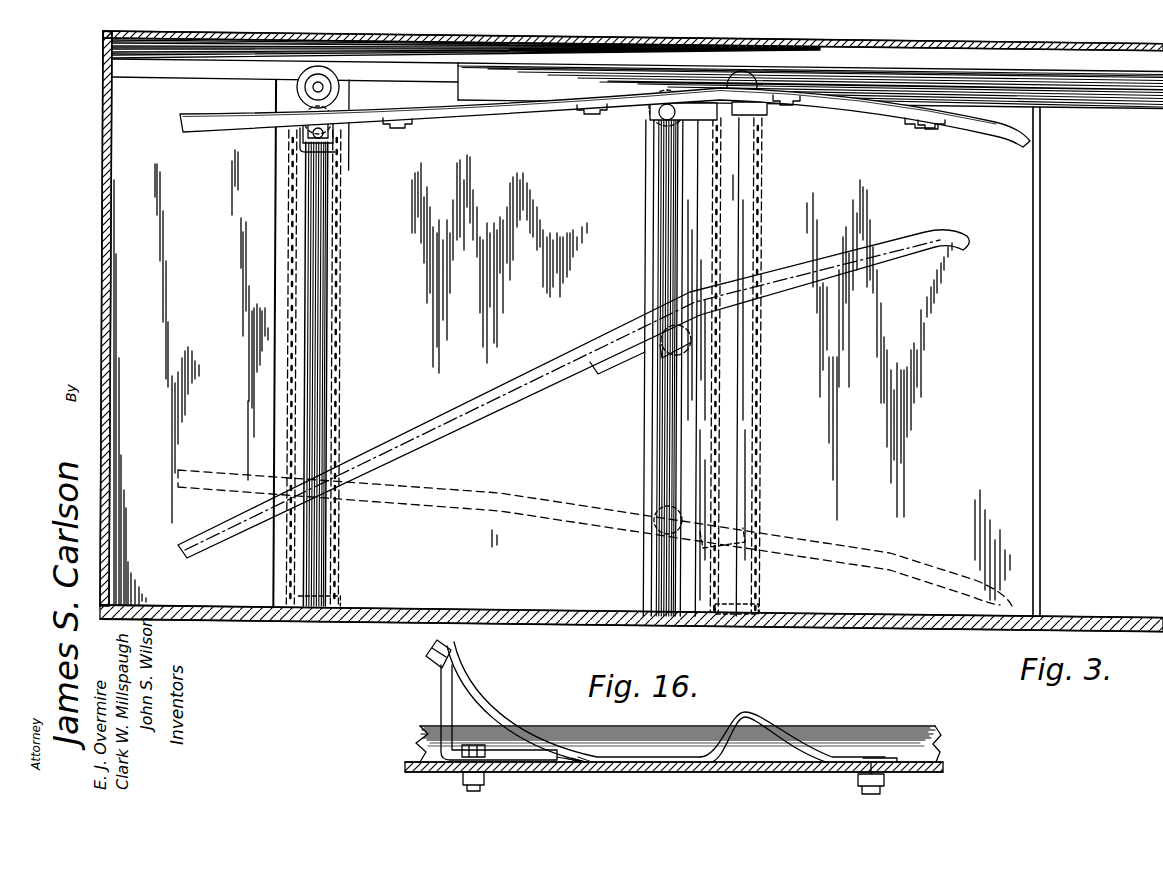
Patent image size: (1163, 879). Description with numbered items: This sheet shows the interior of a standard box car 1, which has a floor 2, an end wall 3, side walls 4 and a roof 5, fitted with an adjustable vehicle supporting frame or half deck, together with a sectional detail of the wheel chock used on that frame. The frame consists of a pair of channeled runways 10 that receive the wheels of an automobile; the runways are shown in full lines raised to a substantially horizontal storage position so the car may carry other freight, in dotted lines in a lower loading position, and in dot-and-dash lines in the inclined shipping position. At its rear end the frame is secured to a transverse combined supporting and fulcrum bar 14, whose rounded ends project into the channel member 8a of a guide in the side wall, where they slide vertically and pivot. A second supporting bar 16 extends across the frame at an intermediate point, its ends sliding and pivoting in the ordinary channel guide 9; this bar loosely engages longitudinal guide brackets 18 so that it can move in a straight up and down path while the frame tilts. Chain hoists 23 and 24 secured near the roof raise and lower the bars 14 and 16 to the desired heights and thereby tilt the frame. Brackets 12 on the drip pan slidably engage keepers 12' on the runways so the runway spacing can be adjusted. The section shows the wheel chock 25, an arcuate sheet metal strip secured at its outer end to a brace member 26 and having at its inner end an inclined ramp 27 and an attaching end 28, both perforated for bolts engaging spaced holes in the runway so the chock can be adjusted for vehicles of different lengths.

In FIG. 3, the box car 1 is at (116, 246).
In FIG. 3, the floor 2 is at (531, 613).
In FIG. 3, the end wall 3 is at (104, 333).
In FIG. 3, the side walls 4 is at (562, 377).
In FIG. 3, the roof 5 is at (548, 31).
In FIG. 3, the channel member 8a is at (318, 288).
In FIG. 3, the guide 9 is at (656, 409).
In FIG. 3, the runways 10 is at (571, 102).
In FIG. 16, the runways 10 is at (420, 742).
In FIG. 3, the brackets 12 is at (908, 143).
In FIG. 3, the keepers 12' is at (655, 118).
In FIG. 3, the combined supporting and fulcrum bar 14 is at (340, 133).
In FIG. 3, the second supporting bar 16 is at (660, 121).
In FIG. 3, the longitudinal guide brackets 18 is at (704, 120).
In FIG. 3, the chain hoist 23 is at (300, 89).
In FIG. 3, the chain hoist 24 is at (760, 116).
In FIG. 16, the wheel chock 25 is at (496, 710).
In FIG. 16, the brace member 26 is at (441, 698).
In FIG. 16, the ramp 27 is at (806, 739).
In FIG. 16, the attaching end 28 is at (886, 762).